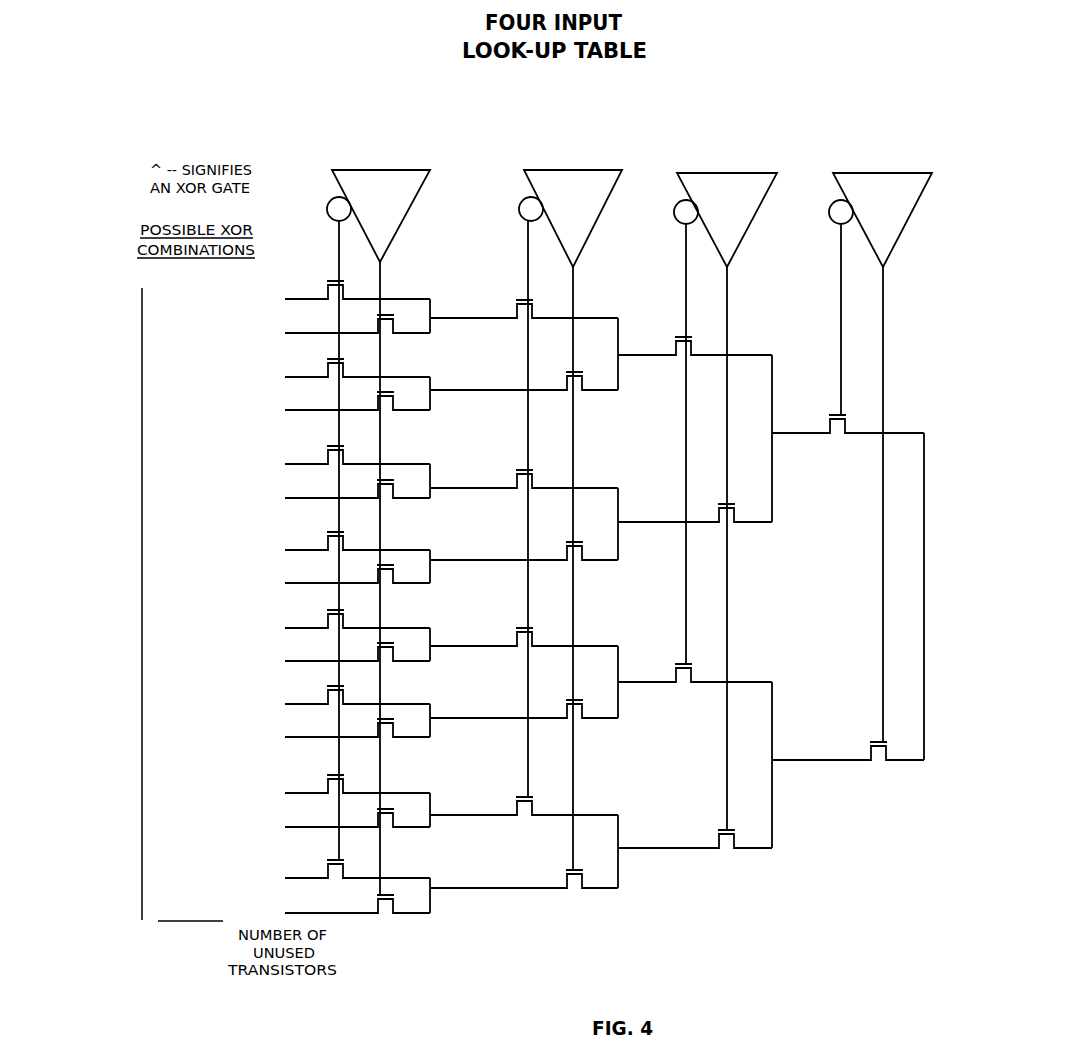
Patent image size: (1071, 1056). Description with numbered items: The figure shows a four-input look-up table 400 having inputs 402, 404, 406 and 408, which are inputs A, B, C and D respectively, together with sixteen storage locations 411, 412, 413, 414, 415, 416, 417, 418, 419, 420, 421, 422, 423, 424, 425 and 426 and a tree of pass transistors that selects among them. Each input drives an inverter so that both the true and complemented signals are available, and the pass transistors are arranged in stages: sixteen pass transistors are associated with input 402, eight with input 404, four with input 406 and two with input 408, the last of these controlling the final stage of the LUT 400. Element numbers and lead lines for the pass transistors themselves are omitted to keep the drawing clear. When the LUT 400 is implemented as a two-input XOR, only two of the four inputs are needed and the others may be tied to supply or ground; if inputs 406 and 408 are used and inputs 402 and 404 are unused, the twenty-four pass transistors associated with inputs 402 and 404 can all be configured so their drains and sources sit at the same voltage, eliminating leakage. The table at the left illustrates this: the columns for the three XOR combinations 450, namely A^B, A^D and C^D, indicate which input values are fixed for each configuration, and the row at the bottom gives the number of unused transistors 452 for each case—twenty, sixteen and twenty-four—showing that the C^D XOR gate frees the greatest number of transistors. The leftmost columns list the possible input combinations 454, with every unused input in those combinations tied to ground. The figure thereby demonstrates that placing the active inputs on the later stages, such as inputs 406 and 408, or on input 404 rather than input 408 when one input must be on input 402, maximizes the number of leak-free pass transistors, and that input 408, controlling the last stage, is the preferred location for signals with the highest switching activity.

The four-input LUT 400 is at (563, 106).
The input 402 is at (378, 524).
The input 404 is at (570, 513).
The input 406 is at (725, 492).
The input 408 is at (880, 448).
The storage location 411 is at (285, 299).
The storage location 412 is at (285, 333).
The storage location 413 is at (285, 377).
The storage location 414 is at (285, 410).
The storage location 415 is at (285, 464).
The storage location 416 is at (285, 498).
The storage location 417 is at (285, 550).
The storage location 418 is at (285, 583).
The storage location 419 is at (285, 628).
The storage location 420 is at (285, 661).
The storage location 421 is at (285, 704).
The storage location 422 is at (285, 737).
The storage location 423 is at (285, 793).
The storage location 424 is at (285, 827).
The storage location 425 is at (285, 878).
The storage location 426 is at (285, 913).
The XOR combinations 450 is at (256, 276).
The number of unused transistors 452 is at (184, 978).
The input combinations 454 is at (84, 270).